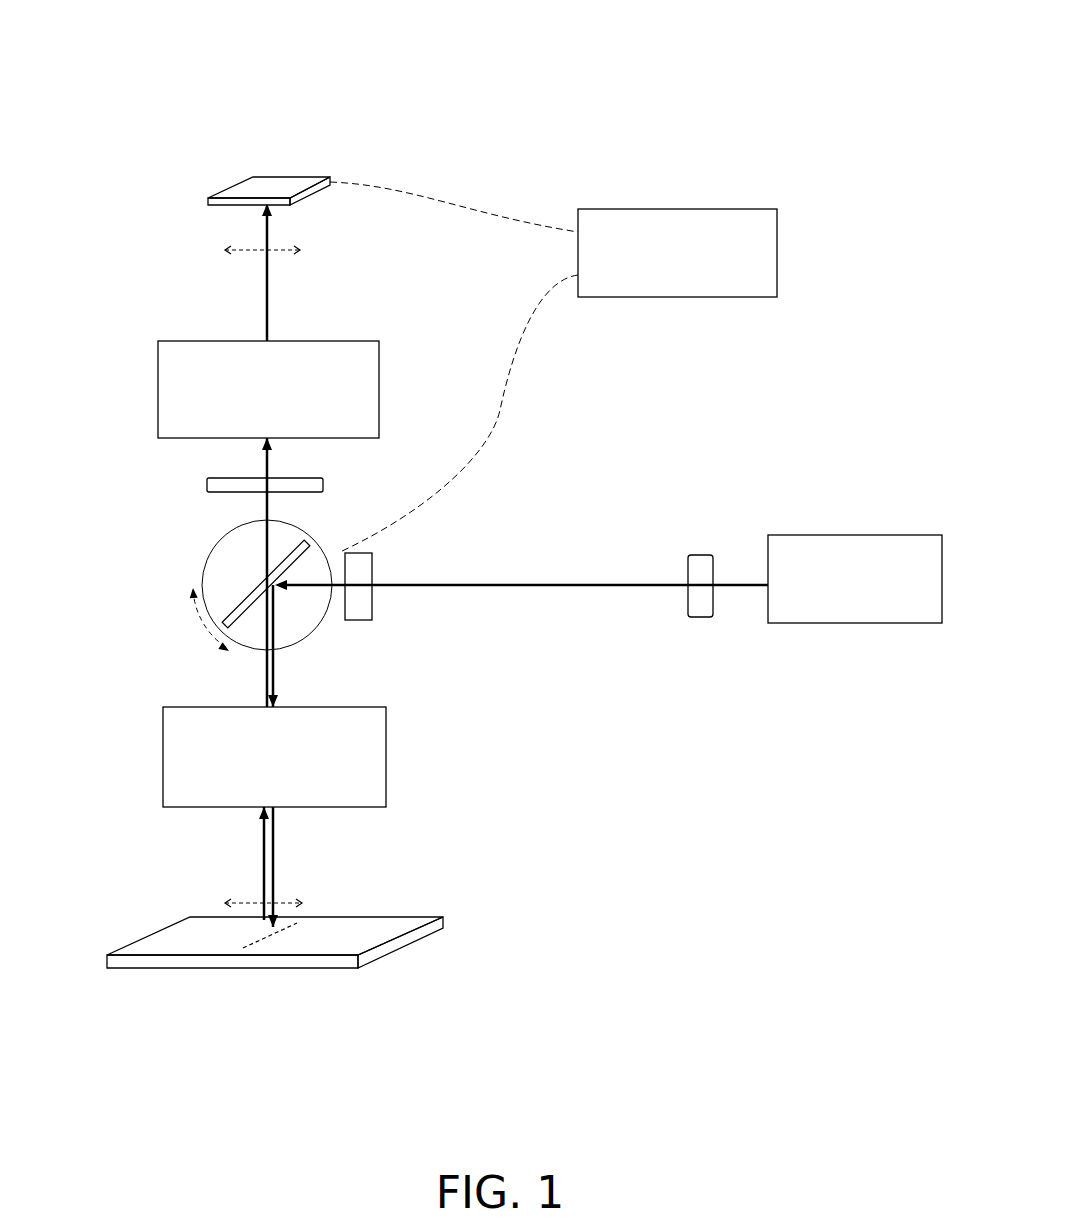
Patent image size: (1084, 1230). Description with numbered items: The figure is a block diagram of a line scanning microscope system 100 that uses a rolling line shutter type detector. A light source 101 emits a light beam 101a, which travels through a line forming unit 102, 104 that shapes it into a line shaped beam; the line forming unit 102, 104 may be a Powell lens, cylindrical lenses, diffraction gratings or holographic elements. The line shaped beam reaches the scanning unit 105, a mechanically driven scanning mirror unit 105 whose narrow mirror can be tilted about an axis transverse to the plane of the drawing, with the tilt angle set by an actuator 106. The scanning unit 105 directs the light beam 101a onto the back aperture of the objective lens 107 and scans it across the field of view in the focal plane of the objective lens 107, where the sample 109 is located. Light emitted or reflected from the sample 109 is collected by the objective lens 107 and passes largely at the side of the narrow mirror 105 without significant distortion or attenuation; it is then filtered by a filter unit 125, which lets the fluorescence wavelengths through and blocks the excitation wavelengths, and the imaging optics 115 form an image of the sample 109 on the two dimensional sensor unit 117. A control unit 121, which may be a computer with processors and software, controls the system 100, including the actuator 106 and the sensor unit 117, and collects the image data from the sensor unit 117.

The line scanning microscope system 100 is at (533, 46).
The light source 101 is at (855, 579).
The light beam 101a is at (722, 590).
The line forming unit 102 is at (713, 557).
The line forming unit 104 is at (347, 622).
The scanning unit 105 is at (247, 587).
The actuator 106 is at (307, 543).
The objective lens 107 is at (274, 757).
The sample 109 is at (427, 917).
The imaging optics 115 is at (268, 389).
The two dimensional sensor unit 117 is at (255, 177).
The control unit 121 is at (553, 367).
The filter unit 125 is at (197, 482).